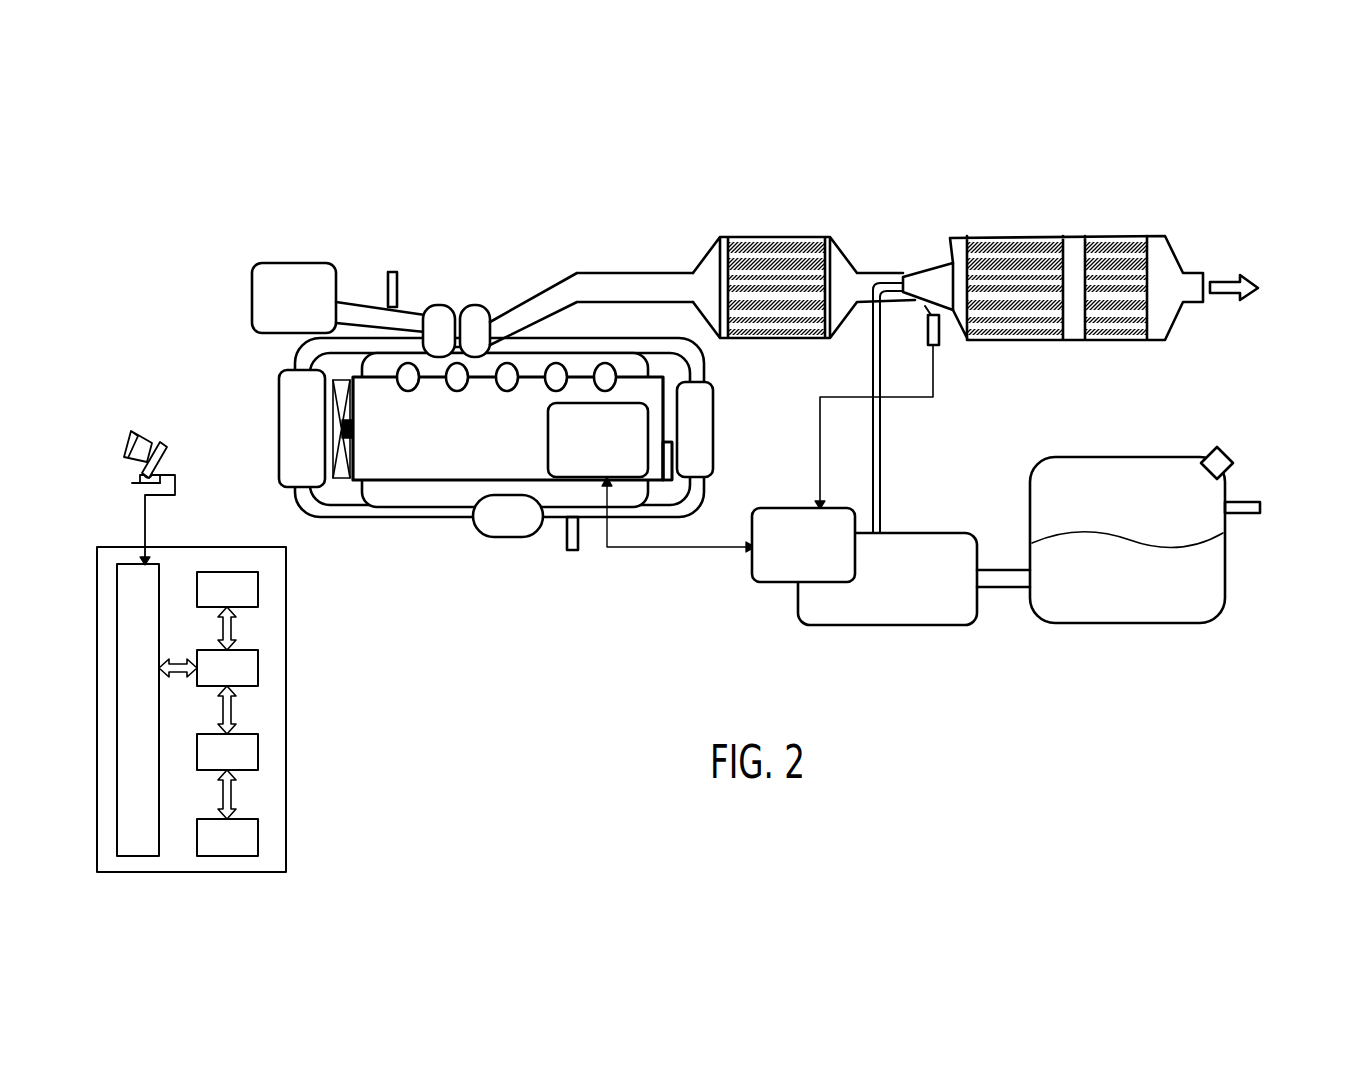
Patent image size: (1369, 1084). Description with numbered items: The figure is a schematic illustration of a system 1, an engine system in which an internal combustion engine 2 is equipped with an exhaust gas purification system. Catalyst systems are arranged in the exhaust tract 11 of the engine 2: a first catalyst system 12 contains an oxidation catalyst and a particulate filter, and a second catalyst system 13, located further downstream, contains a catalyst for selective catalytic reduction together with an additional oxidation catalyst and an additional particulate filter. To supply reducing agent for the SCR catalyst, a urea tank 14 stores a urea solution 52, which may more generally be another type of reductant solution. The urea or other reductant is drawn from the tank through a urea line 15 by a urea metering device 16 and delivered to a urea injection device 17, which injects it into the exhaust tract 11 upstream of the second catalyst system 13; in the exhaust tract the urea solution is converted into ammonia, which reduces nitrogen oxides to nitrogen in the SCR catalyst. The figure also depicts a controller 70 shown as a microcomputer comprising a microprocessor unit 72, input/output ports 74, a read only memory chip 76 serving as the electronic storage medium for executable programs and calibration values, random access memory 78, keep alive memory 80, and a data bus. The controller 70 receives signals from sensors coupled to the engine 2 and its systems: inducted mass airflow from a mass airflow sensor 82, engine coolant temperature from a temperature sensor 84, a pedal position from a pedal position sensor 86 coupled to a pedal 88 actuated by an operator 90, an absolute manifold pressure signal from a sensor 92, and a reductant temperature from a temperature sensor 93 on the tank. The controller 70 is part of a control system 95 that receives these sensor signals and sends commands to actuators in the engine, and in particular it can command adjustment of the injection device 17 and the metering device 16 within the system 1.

The system 1 is at (1278, 338).
The internal combustion engine 2 is at (398, 470).
The exhaust tract 11 is at (596, 272).
The first catalyst system 12 is at (843, 267).
The second catalyst system 13 is at (1168, 270).
The urea tank 14 is at (1185, 535).
The urea line 15 is at (1002, 590).
The urea metering device 16 is at (800, 590).
The urea injection device 17 is at (895, 275).
The urea solution 52 is at (1143, 591).
The controller 70 is at (206, 695).
The microprocessor unit 72 is at (258, 665).
The input/output ports 74 is at (160, 572).
The read only memory chip 76 is at (258, 585).
The random access memory 78 is at (258, 748).
The keep alive memory 80 is at (258, 833).
The mass airflow sensor 82 is at (388, 292).
The temperature sensor 84 is at (672, 460).
The pedal position sensor 86 is at (140, 476).
The pedal 88 is at (163, 453).
The operator 90 is at (128, 438).
The sensor 92 is at (566, 538).
The temperature sensor 93 is at (1240, 500).
The control system 95 is at (64, 813).